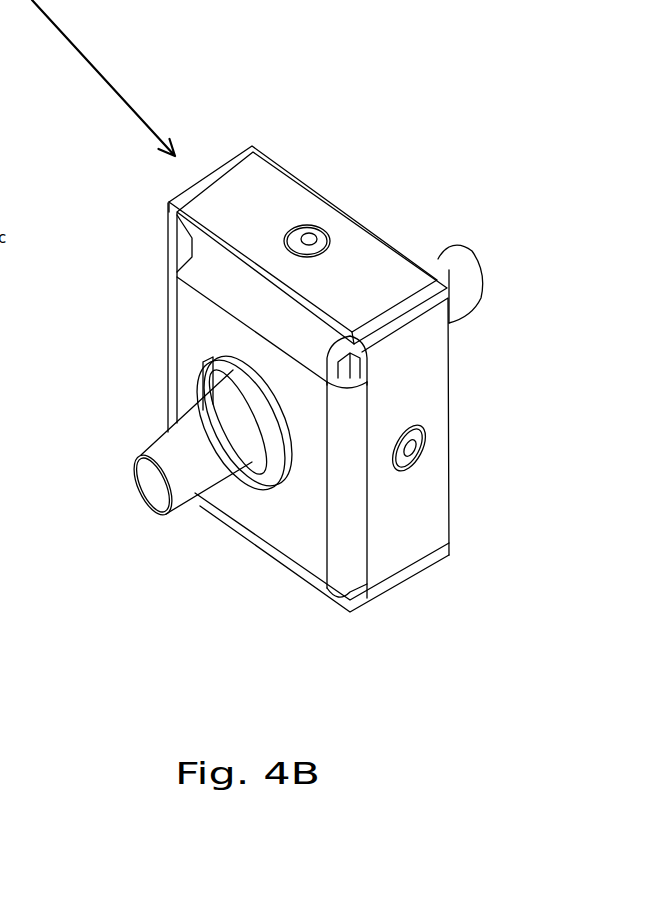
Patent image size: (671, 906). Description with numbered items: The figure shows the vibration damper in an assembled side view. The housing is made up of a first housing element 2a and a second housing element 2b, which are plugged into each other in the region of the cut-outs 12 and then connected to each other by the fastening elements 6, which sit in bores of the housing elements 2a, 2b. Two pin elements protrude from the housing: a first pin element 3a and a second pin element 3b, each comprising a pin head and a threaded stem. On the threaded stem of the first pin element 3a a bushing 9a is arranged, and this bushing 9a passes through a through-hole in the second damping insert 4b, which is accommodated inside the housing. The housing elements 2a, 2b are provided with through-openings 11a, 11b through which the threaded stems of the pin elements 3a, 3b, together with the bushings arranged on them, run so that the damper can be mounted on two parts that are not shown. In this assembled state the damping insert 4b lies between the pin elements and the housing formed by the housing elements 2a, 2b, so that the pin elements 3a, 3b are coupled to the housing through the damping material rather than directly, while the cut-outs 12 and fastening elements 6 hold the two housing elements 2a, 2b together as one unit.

The first housing element 2a is at (425, 357).
The second housing element 2b is at (240, 192).
The fastening element 6 is at (315, 232).
The second pin element 3b is at (461, 268).
The cut-out 12 is at (367, 353).
The second damping insert 4b is at (280, 463).
The bushing 9a is at (268, 448).
The first pin element 3a is at (180, 458).
The through-opening 11a is at (207, 379).
The through-opening 11b is at (96, 283).